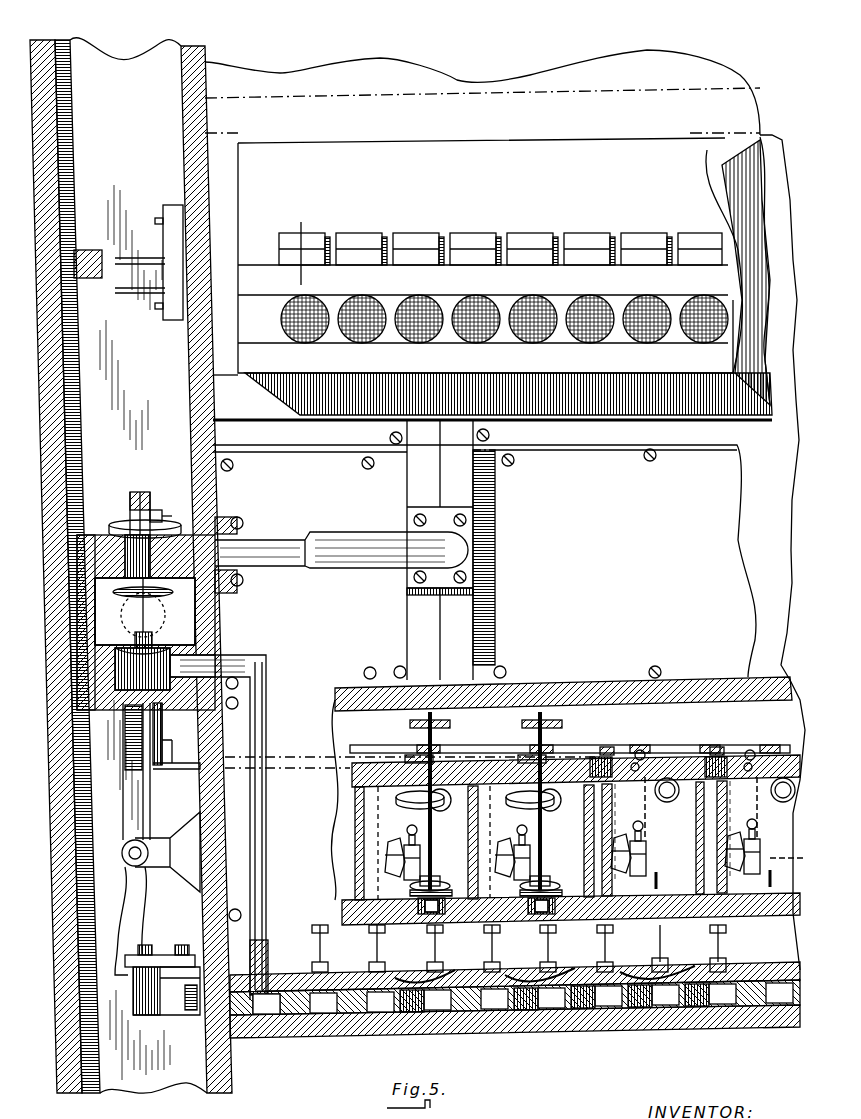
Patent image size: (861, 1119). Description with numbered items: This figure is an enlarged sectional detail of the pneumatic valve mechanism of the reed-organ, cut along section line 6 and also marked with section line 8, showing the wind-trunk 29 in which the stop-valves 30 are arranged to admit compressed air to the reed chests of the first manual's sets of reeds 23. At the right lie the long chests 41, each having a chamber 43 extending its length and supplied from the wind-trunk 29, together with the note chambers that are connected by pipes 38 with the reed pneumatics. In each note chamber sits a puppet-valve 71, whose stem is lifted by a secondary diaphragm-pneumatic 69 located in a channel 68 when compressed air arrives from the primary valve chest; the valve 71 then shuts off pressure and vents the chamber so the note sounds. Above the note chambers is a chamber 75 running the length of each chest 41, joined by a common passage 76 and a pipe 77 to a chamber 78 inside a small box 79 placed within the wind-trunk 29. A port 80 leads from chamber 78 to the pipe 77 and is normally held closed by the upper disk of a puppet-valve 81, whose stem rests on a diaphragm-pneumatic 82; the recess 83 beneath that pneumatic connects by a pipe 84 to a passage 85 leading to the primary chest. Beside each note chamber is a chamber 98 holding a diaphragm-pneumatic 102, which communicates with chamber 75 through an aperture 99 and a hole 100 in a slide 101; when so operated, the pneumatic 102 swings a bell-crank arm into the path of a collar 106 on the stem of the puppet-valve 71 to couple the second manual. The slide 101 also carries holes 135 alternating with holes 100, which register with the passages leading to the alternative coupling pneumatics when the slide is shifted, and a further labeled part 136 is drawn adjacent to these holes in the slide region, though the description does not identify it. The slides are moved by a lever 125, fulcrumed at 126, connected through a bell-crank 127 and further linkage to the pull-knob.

The section line 6 6 is at (297, 70).
The sets of reeds of the first manual 23 is at (475, 238).
The stop-valves 30 is at (165, 262).
The wind-trunk 29 is at (131, 565).
The puppet-valve 81 is at (126, 522).
The slide 101 is at (185, 522).
The port or passage 80 is at (80, 542).
The small box 79 is at (47, 580).
The chamber 78 is at (145, 611).
The diaphragm-pneumatic 82 is at (162, 645).
The chamber or recess 83 is at (142, 669).
The pipe 77 is at (341, 555).
The passage 76 is at (440, 550).
The long chest 41 is at (805, 915).
The holes 135 is at (685, 745).
The guide block 136 is at (643, 760).
The holes 100 is at (697, 750).
The aperture 99 is at (597, 765).
The chamber 75 is at (662, 757).
The chamber 43 is at (362, 750).
The pipes or passages 38 is at (442, 790).
The puppet-valve 71 is at (438, 806).
The chamber 98 is at (372, 828).
The collar 106 is at (442, 878).
The section line 8 8 is at (568, 866).
The pipe 84 is at (268, 818).
The fulcrum 126 is at (128, 853).
The lever 125 is at (122, 900).
The bell-crank 127 is at (160, 955).
The passage 85 is at (265, 1012).
The secondary diaphragm-pneumatic 69 is at (403, 1010).
The passage or channel 68 is at (436, 1008).
The diaphragm-pneumatic 102 is at (606, 915).